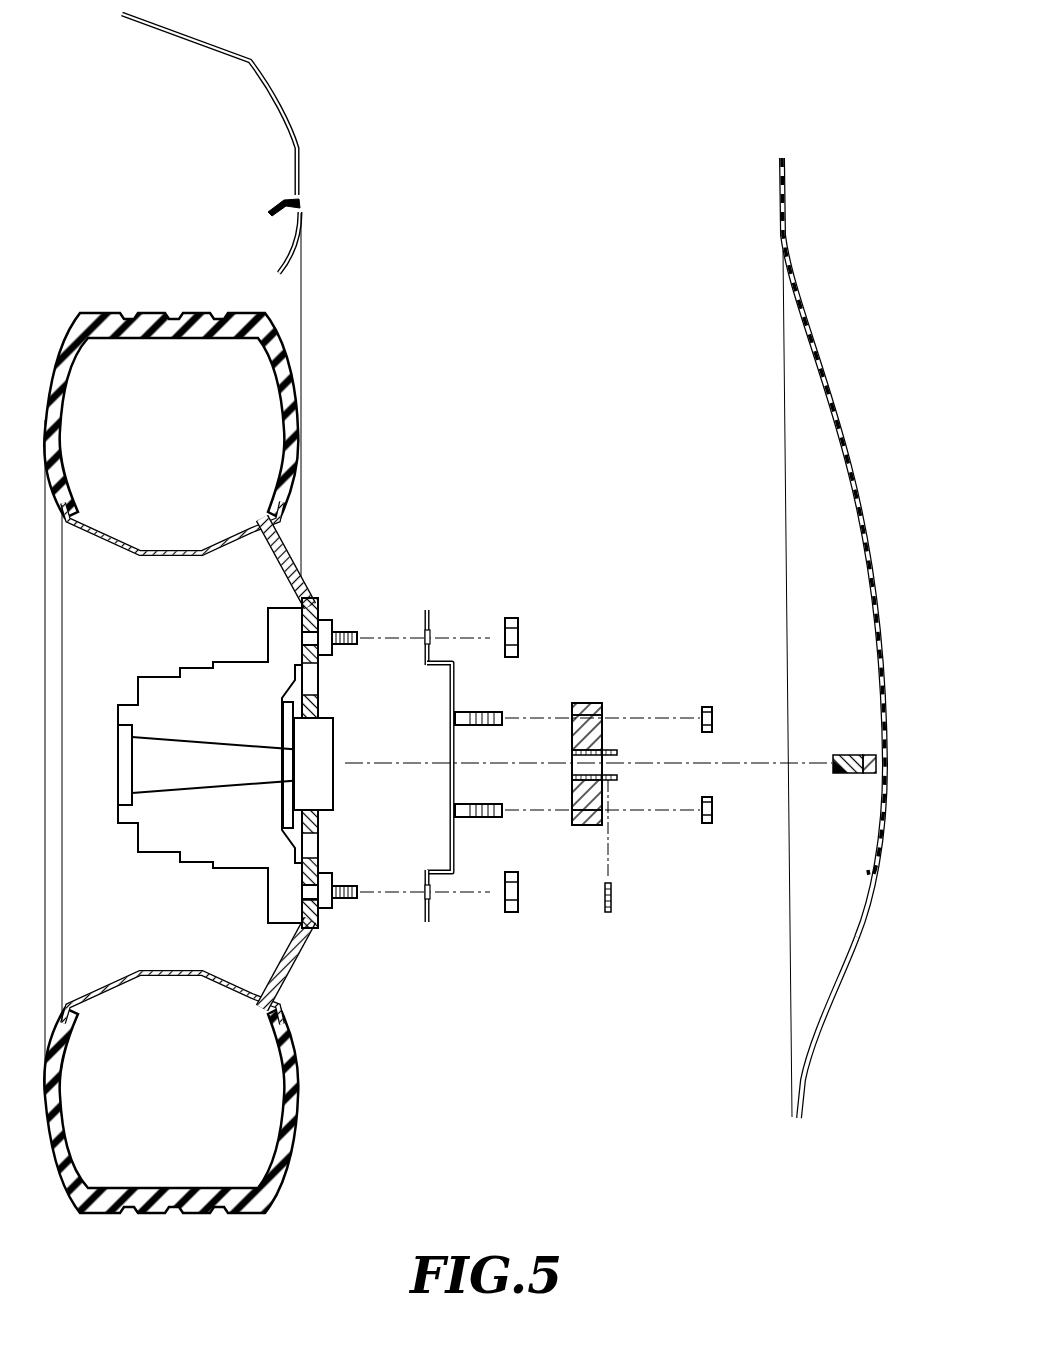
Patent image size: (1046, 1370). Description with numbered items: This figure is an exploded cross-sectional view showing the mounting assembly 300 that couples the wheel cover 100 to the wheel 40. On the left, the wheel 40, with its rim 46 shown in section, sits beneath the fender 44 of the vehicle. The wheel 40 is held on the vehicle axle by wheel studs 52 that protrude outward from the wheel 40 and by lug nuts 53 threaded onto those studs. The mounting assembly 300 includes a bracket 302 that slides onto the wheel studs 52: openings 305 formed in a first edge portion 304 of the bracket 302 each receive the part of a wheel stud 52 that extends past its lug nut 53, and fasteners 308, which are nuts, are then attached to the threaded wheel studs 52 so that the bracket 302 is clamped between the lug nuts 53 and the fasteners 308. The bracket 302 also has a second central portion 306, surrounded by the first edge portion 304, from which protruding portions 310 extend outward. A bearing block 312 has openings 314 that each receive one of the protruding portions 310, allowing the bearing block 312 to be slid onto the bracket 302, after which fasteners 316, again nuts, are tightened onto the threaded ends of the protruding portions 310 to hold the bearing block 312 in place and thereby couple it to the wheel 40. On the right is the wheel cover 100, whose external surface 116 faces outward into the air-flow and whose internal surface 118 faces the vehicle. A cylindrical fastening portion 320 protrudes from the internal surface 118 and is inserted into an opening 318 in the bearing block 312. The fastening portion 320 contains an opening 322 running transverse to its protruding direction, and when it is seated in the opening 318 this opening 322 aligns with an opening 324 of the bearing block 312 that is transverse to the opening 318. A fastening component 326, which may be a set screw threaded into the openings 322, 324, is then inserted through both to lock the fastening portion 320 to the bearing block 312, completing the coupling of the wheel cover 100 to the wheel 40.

The wheel 40 is at (172, 312).
The fender 44 is at (298, 171).
The rim 46 is at (282, 1025).
The wheel studs 52 is at (345, 652).
The lug nuts 53 is at (332, 622).
The wheel cover 100 is at (847, 638).
The external surface 116 is at (892, 672).
The internal surface 118 is at (852, 936).
The mounting assembly 300 is at (493, 478).
The bracket 302 is at (423, 597).
The first edge portion 304 is at (430, 923).
The openings 305 is at (434, 636).
The second central portion 306 is at (449, 832).
The fasteners 308 is at (519, 622).
The protruding portions 310 is at (497, 712).
The bearing block 312 is at (588, 703).
The openings 314 is at (599, 746).
The fasteners 316 is at (709, 707).
The opening 318 is at (621, 763).
The fastening portion 320 is at (855, 774).
The opening 322 is at (868, 750).
The opening 324 is at (615, 782).
The fastening component 326 is at (613, 906).